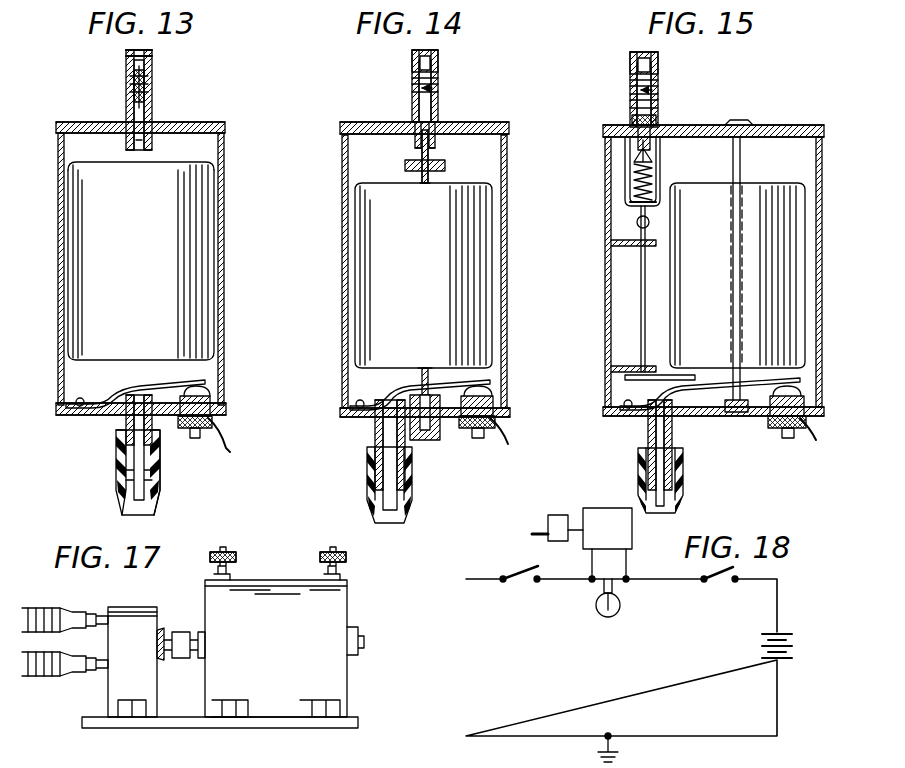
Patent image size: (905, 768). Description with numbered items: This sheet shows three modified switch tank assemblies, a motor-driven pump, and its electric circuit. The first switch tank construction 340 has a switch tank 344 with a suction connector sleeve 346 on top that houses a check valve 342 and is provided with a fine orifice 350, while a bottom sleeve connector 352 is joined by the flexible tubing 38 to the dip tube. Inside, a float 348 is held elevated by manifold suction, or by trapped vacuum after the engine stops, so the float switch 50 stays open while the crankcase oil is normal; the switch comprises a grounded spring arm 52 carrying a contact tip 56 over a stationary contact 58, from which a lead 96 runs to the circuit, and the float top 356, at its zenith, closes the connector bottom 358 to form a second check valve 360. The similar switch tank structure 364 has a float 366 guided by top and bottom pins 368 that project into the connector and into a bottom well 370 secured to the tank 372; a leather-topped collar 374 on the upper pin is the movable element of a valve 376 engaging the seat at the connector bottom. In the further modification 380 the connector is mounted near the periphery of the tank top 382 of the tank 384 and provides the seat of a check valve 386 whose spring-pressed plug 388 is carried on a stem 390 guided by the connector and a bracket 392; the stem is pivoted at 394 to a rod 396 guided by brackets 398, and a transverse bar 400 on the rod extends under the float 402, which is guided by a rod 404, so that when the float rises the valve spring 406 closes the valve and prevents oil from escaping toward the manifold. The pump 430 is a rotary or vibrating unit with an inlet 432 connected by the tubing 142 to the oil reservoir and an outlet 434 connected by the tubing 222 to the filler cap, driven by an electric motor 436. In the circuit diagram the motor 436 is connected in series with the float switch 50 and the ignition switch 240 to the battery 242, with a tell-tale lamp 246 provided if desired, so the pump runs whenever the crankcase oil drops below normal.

In FIG. 13, the flexible tubing 38 is at (116, 470).
In FIG. 14, the flexible tubing 38 is at (367, 460).
In FIG. 15, the flexible tubing 38 is at (640, 460).
In FIG. 18, the flexible tubing 38 is at (450, 649).
In FIG. 13, the float switch 50 is at (212, 380).
In FIG. 14, the float switch 50 is at (492, 382).
In FIG. 15, the float switch 50 is at (805, 388).
In FIG. 18, the float switch 50 is at (542, 575).
In FIG. 13, the spring arm 52 is at (142, 385).
In FIG. 14, the spring arm 52 is at (450, 375).
In FIG. 15, the spring arm 52 is at (756, 380).
In FIG. 18, the spring arm 52 is at (520, 566).
In FIG. 18, the contact tip 56 is at (624, 760).
In FIG. 13, the stationary contact 58 is at (212, 396).
In FIG. 14, the stationary contact 58 is at (494, 396).
In FIG. 15, the stationary contact 58 is at (780, 440).
In FIG. 18, the stationary contact 58 is at (535, 583).
In FIG. 13, the lead wire 96 is at (228, 444).
In FIG. 14, the lead wire 96 is at (508, 438).
In FIG. 15, the lead wire 96 is at (812, 446).
In FIG. 18, the lead wire 96 is at (562, 586).
In FIG. 17, the tubing 142 is at (36, 608).
In FIG. 17, the tubing 222 is at (40, 678).
In FIG. 18, the ignition switch 240 is at (748, 573).
In FIG. 18, the battery 242 is at (816, 622).
In FIG. 18, the tell-tale lamp 246 is at (622, 605).
In FIG. 13, the switch tank construction 340 is at (226, 282).
In FIG. 13, the check valve 342 is at (130, 86).
In FIG. 14, the check valve 342 is at (442, 85).
In FIG. 15, the check valve 342 is at (630, 86).
In FIG. 13, the switch tank 344 is at (240, 135).
In FIG. 13, the suction connector sleeve 346 is at (150, 112).
In FIG. 14, the suction connector sleeve 346 is at (440, 106).
In FIG. 15, the suction connector sleeve 346 is at (660, 92).
In FIG. 13, the float 348 is at (204, 232).
In FIG. 13, the fine orifice 350 is at (128, 48).
In FIG. 14, the fine orifice 350 is at (432, 58).
In FIG. 15, the fine orifice 350 is at (632, 54).
In FIG. 13, the bottom sleeve connector 352 is at (126, 433).
In FIG. 14, the bottom sleeve connector 352 is at (375, 430).
In FIG. 15, the bottom sleeve connector 352 is at (648, 428).
In FIG. 13, the float top 356 is at (179, 168).
In FIG. 13, the bottom of suction sleeve connector 358 is at (141, 152).
In FIG. 14, the bottom of suction sleeve connector 358 is at (418, 152).
In FIG. 15, the bottom of suction sleeve connector 358 is at (622, 150).
In FIG. 13, the check valve 360 is at (124, 151).
In FIG. 14, the switch tank structure 364 is at (510, 195).
In FIG. 14, the float 366 is at (482, 262).
In FIG. 14, the top and bottom pins 368 is at (426, 186).
In FIG. 14, the bottom well 370 is at (440, 440).
In FIG. 14, the tank 372 is at (505, 304).
In FIG. 14, the collar 374 is at (446, 166).
In FIG. 14, the valve 376 is at (438, 156).
In FIG. 15, the switch tank modification 380 is at (788, 120).
In FIG. 15, the tank top 382 is at (692, 132).
In FIG. 15, the tank 384 is at (628, 190).
In FIG. 15, the check valve 386 is at (624, 158).
In FIG. 15, the spring-pressed plug 388 is at (654, 160).
In FIG. 15, the stem 390 is at (630, 116).
In FIG. 15, the bracket 392 is at (632, 200).
In FIG. 15, the pivot 394 is at (650, 220).
In FIG. 15, the rod 396 is at (640, 298).
In FIG. 15, the brackets 398 is at (618, 246).
In FIG. 15, the transverse bar 400 is at (678, 374).
In FIG. 15, the float 402 is at (792, 182).
In FIG. 15, the guide rod 404 is at (741, 156).
In FIG. 15, the valve spring 406 is at (654, 174).
In FIG. 17, the pump 430 is at (158, 588).
In FIG. 18, the pump 430 is at (558, 514).
In FIG. 17, the inlet 432 is at (100, 610).
In FIG. 18, the inlet 432 is at (544, 522).
In FIG. 17, the outlet 434 is at (100, 675).
In FIG. 18, the outlet 434 is at (532, 534).
In FIG. 17, the electric motor 436 is at (348, 600).
In FIG. 18, the electric motor 436 is at (598, 506).